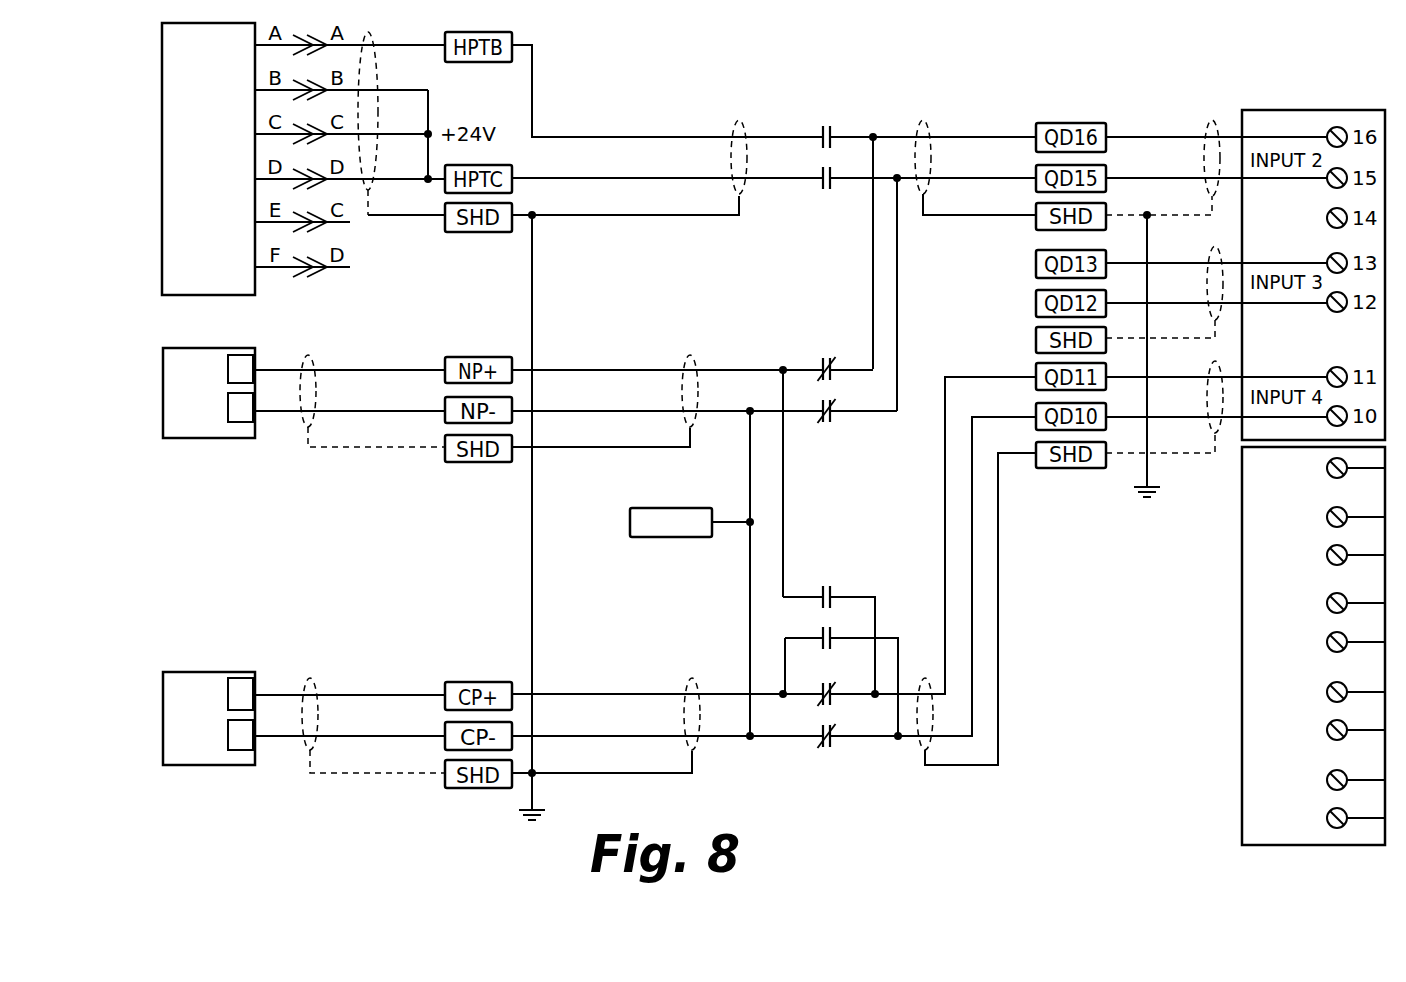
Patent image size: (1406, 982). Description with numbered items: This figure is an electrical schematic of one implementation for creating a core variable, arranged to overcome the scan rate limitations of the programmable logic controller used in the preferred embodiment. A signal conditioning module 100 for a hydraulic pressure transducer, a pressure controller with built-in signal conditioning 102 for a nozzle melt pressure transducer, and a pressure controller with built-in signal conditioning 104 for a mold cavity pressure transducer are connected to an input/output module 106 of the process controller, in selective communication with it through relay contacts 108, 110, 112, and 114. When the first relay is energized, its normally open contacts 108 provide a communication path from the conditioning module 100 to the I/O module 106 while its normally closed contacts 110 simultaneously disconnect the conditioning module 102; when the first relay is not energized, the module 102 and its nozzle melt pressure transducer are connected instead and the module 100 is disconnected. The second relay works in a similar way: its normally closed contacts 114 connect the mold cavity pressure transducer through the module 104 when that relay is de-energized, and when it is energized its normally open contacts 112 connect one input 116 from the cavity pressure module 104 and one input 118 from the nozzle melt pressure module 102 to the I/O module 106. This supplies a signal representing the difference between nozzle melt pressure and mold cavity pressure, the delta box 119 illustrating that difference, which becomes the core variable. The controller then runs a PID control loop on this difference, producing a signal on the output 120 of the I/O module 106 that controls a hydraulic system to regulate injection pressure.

The signal conditioning module 100 is at (162, 133).
The pressure controller with built-in signal conditioning 102 is at (163, 410).
The pressure controller with built-in signal conditioning 104 is at (163, 720).
The input/output module 106 is at (1260, 646).
The normally open contacts 108 is at (819, 206).
The normally closed contacts 110 is at (820, 344).
The normally open contacts 112 is at (837, 560).
The normally closed contacts 114 is at (832, 756).
The input 116 is at (588, 694).
The input 118 is at (787, 483).
The delta box 119 is at (662, 538).
The output 120 is at (1283, 619).